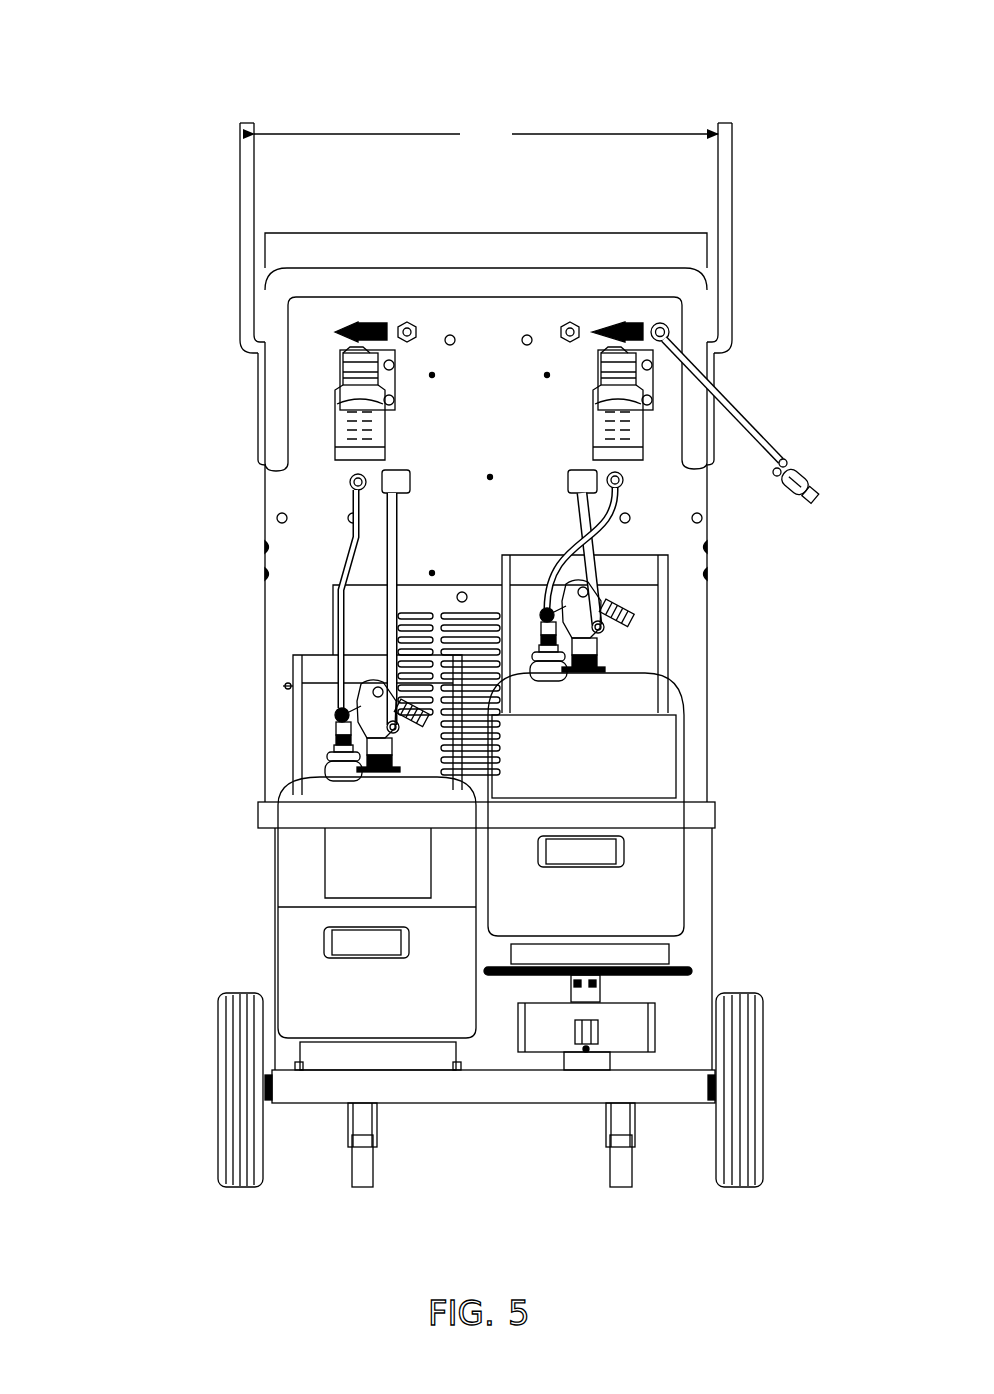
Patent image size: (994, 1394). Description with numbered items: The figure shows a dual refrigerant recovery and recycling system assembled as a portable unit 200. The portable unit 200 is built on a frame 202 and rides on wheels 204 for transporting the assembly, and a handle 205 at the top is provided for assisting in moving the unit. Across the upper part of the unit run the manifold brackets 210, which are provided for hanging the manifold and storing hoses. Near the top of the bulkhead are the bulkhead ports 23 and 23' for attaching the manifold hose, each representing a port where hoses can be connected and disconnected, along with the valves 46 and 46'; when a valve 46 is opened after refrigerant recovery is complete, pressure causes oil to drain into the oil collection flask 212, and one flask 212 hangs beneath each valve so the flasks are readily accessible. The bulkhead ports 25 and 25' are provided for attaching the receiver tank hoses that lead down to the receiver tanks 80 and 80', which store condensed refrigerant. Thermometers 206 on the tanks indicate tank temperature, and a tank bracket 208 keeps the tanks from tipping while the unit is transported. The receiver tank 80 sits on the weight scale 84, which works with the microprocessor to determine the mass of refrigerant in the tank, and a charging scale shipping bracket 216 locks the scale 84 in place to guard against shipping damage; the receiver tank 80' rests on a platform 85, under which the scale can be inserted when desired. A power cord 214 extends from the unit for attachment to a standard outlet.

The portable unit 200 is at (237, 75).
The handle 205 is at (303, 268).
The manifold brackets 210 is at (486, 135).
The oil collection flask 212 is at (333, 413).
The valve 46' is at (354, 252).
The bulkhead port 23' is at (414, 261).
The bulkhead port 23 is at (555, 254).
The valve 46 is at (630, 248).
The power cord 214 is at (793, 455).
The bulkhead port 25' is at (403, 572).
The bulkhead port 25 is at (563, 527).
The receiver tank 80 is at (586, 758).
The receiver tank 80' is at (377, 859).
The thermometers 206 is at (531, 855).
The tank bracket 208 is at (255, 805).
The weight scale 84 is at (636, 1003).
The charging scale shipping bracket 216 is at (625, 1062).
The platform 85 is at (466, 1052).
The frame 202 is at (507, 1105).
The wheels 204 is at (213, 1090).